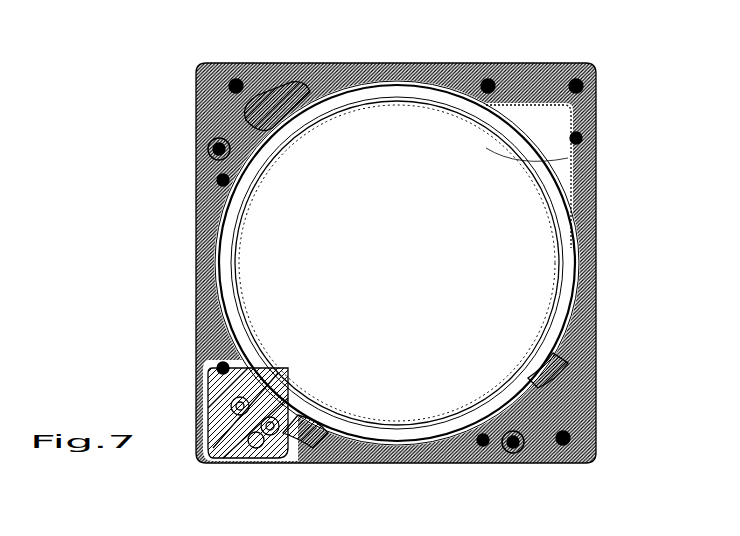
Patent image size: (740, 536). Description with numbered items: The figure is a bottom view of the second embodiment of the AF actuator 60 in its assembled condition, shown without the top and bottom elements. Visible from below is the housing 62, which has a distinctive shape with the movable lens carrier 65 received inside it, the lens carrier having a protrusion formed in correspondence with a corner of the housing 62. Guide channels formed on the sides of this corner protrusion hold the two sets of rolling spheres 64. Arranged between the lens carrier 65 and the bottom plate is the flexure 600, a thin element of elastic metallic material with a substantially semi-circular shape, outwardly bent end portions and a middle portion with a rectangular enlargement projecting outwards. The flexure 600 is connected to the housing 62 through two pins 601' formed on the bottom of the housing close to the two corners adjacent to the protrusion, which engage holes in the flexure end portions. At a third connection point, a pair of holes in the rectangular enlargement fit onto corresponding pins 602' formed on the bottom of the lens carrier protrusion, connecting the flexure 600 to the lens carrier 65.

The AF actuator 60 is at (131, 104).
The housing 62 is at (336, 56).
The rolling spheres 64 is at (192, 352).
The movable lens carrier 65 is at (596, 90).
The flexure 600 is at (398, 460).
The pins 601' is at (334, 300).
The pins 602' is at (233, 442).